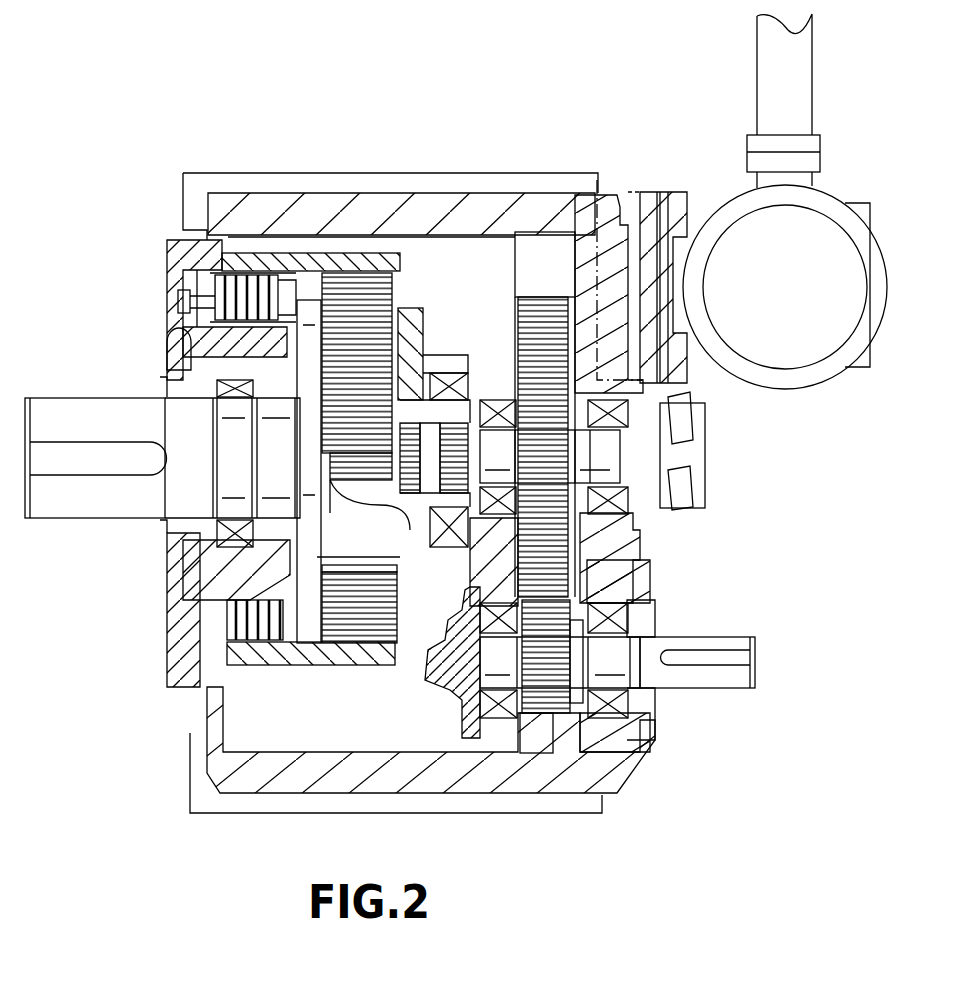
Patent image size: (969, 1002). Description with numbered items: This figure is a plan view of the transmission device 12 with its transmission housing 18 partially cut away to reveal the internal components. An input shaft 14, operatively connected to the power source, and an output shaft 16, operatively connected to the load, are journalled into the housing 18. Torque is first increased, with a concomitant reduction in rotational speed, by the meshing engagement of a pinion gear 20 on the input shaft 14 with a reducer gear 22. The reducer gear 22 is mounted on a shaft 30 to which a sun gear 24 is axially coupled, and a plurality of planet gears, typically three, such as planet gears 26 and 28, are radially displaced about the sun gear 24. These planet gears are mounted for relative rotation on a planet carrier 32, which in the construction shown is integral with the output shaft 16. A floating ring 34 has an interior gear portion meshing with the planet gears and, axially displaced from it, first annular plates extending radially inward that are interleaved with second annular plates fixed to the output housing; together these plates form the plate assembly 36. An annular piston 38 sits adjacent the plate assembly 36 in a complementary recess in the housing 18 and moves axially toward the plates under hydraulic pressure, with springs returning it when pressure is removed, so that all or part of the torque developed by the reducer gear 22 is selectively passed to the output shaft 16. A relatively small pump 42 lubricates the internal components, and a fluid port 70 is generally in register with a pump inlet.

The transmission device 12 is at (328, 132).
The input shaft 14 is at (690, 690).
The output shaft 16 is at (63, 520).
The transmission housing 18 is at (200, 715).
The pinion gear 20 is at (550, 713).
The reducer gear 22 is at (545, 295).
The sun gear 24 is at (345, 490).
The planet gear 26 is at (400, 660).
The planet gear 28 is at (412, 268).
The shaft 30 is at (622, 462).
The planet carrier 32 is at (430, 335).
The floating ring 34 is at (290, 665).
The plate assembly 36 is at (285, 290).
The annular piston 38 is at (178, 300).
The pump 42 is at (707, 498).
The fluid port 70 is at (700, 200).